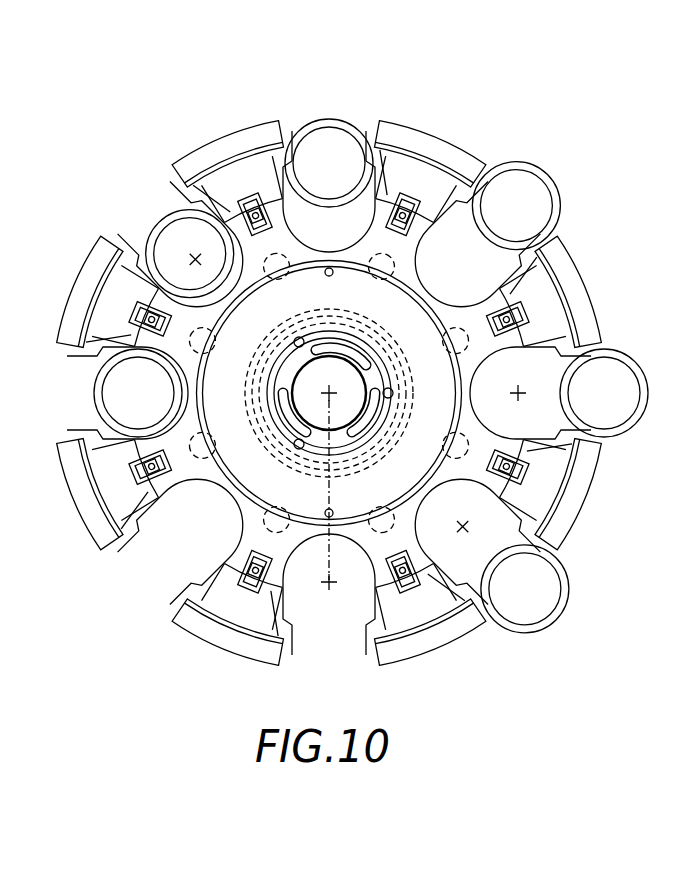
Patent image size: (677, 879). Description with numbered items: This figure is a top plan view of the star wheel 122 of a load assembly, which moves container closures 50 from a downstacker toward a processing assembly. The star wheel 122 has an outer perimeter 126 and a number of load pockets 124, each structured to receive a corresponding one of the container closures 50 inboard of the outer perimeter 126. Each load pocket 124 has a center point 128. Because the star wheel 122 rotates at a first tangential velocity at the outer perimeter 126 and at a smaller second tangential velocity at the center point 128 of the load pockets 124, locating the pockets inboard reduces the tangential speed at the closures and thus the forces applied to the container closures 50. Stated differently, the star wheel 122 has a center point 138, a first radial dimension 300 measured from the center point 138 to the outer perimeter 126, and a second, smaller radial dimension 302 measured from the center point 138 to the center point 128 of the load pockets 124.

The container closure 50 is at (335, 120).
The star wheel 122 is at (582, 548).
The load pocket 124 is at (372, 236).
The outer perimeter 126 is at (80, 268).
The center point of load pocket 128 is at (338, 601).
The center point of star wheel 138 is at (352, 372).
The first radial dimension 300 is at (229, 156).
The second radial dimension 302 is at (331, 494).